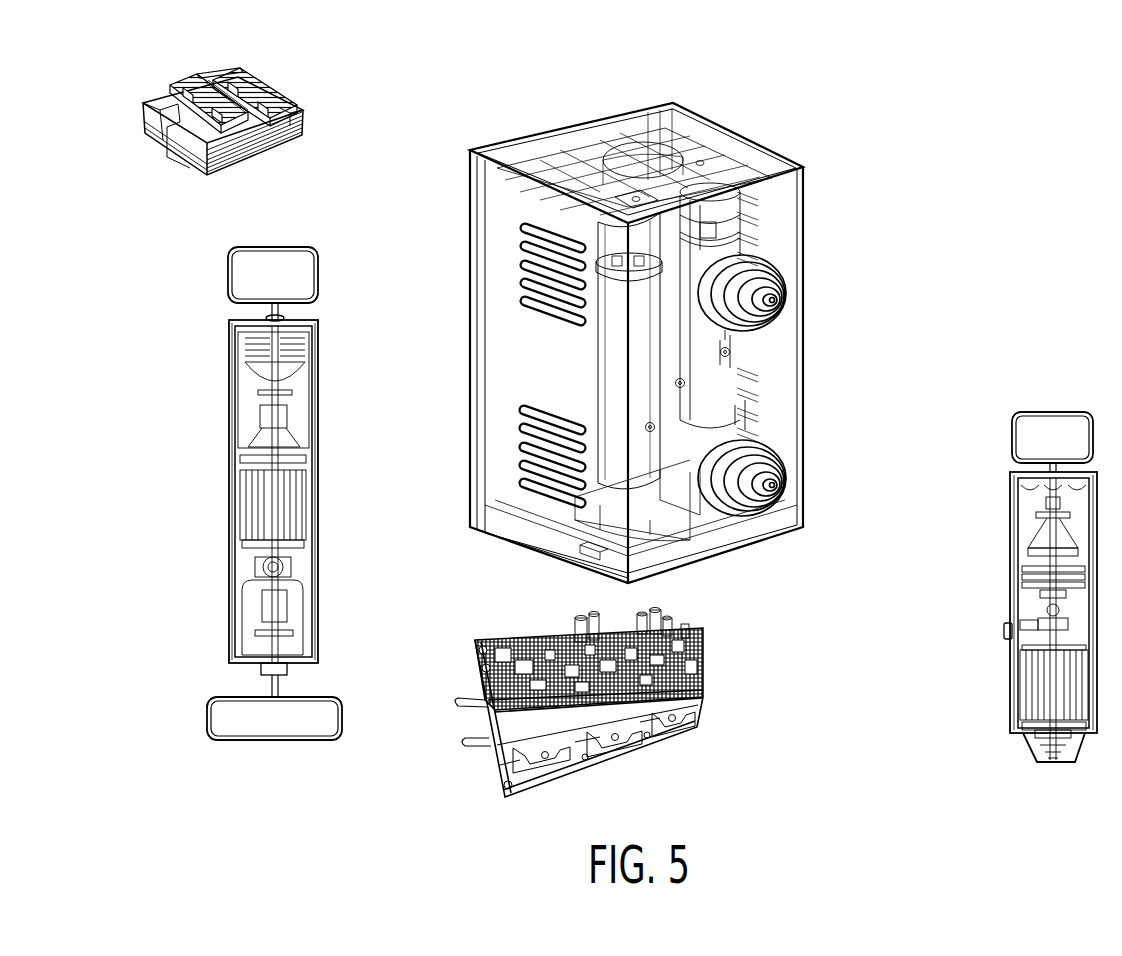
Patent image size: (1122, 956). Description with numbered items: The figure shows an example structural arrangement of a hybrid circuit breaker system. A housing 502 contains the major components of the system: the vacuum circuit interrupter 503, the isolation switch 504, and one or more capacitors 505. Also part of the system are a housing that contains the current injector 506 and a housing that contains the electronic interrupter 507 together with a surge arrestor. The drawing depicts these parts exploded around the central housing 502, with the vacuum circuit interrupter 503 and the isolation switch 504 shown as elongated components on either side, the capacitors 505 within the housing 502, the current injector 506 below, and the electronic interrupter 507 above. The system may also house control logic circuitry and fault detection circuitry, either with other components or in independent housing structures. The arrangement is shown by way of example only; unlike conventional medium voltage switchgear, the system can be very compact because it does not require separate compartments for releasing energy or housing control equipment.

The housing 502 is at (807, 250).
The vacuum circuit interrupter 503 is at (610, 355).
The isolation switch 504 is at (780, 362).
The capacitors 505 is at (638, 143).
The current injector 506 is at (560, 497).
The electronic interrupter 507 is at (519, 288).